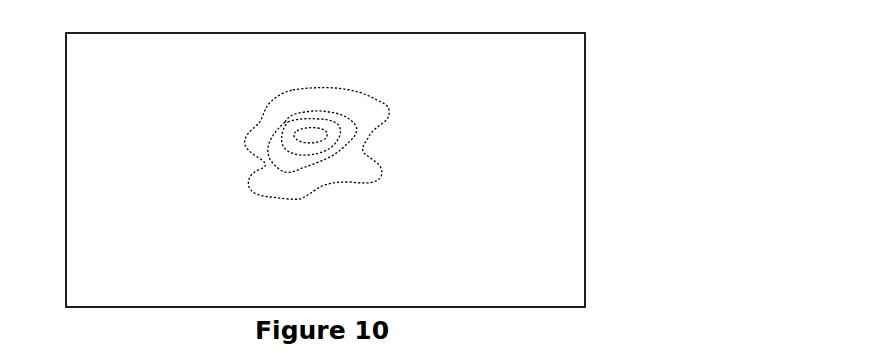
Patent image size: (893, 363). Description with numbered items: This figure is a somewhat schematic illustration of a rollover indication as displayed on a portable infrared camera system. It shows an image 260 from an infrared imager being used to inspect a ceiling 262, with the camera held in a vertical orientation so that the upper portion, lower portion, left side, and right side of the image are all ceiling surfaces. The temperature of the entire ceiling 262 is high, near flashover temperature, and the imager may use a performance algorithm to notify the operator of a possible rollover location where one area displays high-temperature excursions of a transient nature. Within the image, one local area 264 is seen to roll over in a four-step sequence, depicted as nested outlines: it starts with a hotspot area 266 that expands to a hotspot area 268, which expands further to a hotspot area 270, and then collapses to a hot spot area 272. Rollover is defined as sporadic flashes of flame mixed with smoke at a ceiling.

The image 260 is at (657, 127).
The ceiling 262 is at (184, 119).
The local area 264 is at (321, 172).
The hotspot area 266 is at (311, 137).
The hotspot area 268 is at (312, 141).
The hotspot area 270 is at (317, 144).
The hot spot area 272 is at (317, 140).